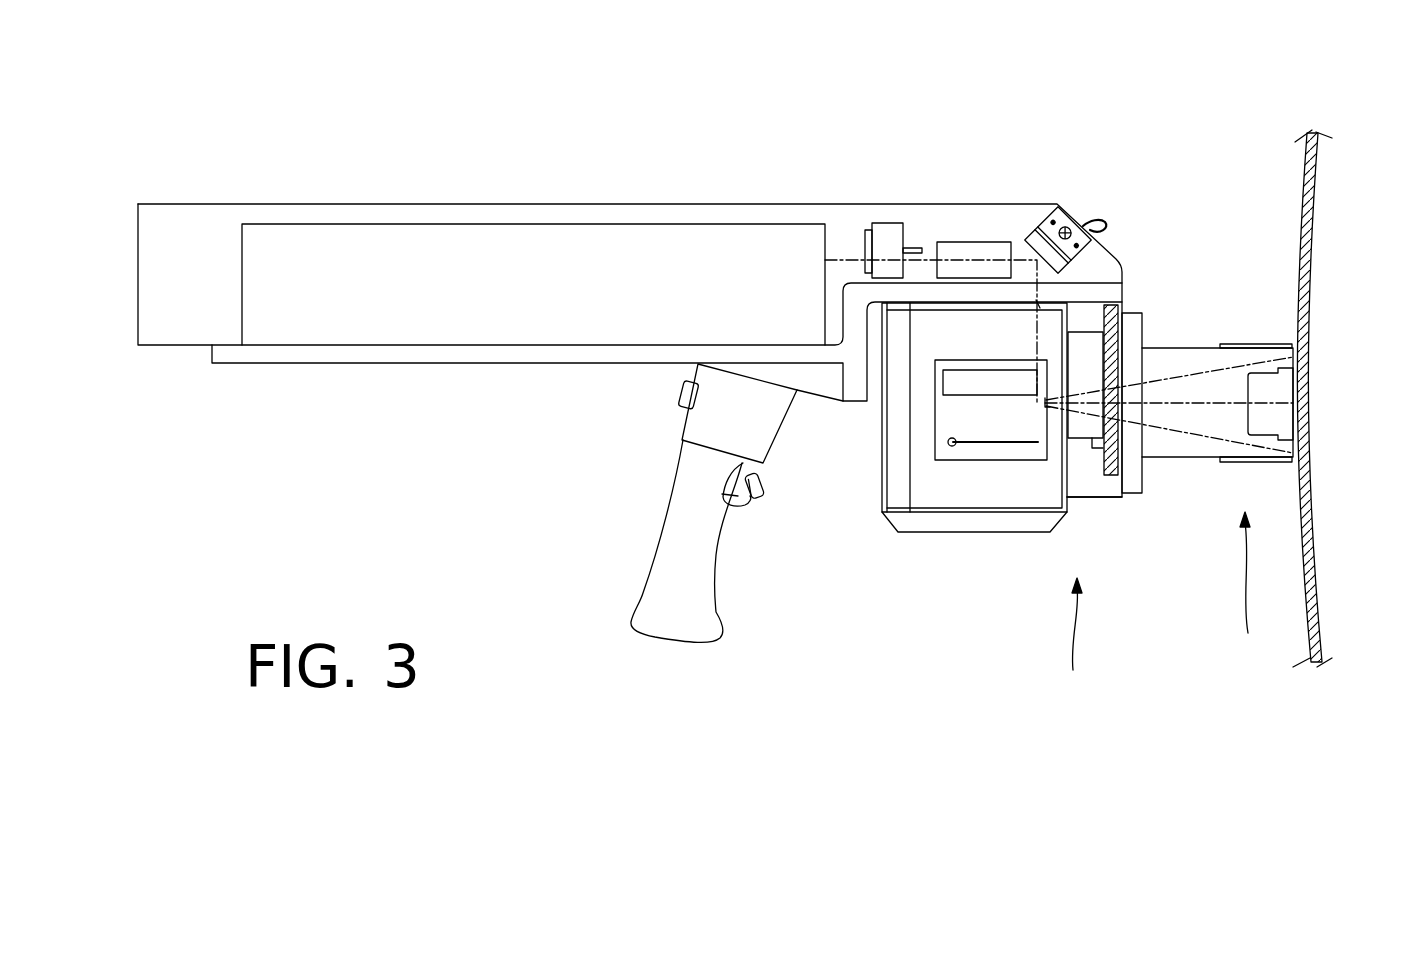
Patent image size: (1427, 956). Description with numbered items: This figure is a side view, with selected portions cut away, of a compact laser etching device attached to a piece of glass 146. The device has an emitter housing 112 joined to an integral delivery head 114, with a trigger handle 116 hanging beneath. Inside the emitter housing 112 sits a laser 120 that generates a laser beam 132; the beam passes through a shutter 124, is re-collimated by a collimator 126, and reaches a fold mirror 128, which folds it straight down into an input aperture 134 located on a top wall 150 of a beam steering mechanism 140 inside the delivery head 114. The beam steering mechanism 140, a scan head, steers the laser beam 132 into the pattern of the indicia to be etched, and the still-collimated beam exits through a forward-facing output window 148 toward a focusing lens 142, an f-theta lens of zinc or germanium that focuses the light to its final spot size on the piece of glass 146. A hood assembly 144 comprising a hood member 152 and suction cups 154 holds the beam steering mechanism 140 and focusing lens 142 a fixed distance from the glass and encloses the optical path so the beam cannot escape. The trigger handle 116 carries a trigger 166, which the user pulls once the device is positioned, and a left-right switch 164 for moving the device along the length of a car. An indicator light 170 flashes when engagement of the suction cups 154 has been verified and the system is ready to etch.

The emitter housing 112 is at (215, 212).
The delivery head 114 is at (1078, 638).
The trigger handle 116 is at (665, 530).
The laser 120 is at (408, 238).
The shutter 124 is at (885, 232).
The collimator 126 is at (972, 246).
The fold mirror 128 is at (1045, 247).
The laser beam 132 is at (927, 260).
The input aperture 134 is at (1040, 306).
The beam steering mechanism 140 is at (958, 487).
The focusing lens 142 is at (1110, 476).
The hood assembly 144 is at (1248, 585).
The piece of glass 146 is at (1313, 547).
The output window 148 is at (1050, 407).
The top wall 150 is at (1070, 313).
The hood member 152 is at (1195, 460).
The suction cups 154 is at (1285, 387).
The left-right switch 164 is at (683, 392).
The trigger 166 is at (763, 489).
The indicator light 170 is at (1105, 222).